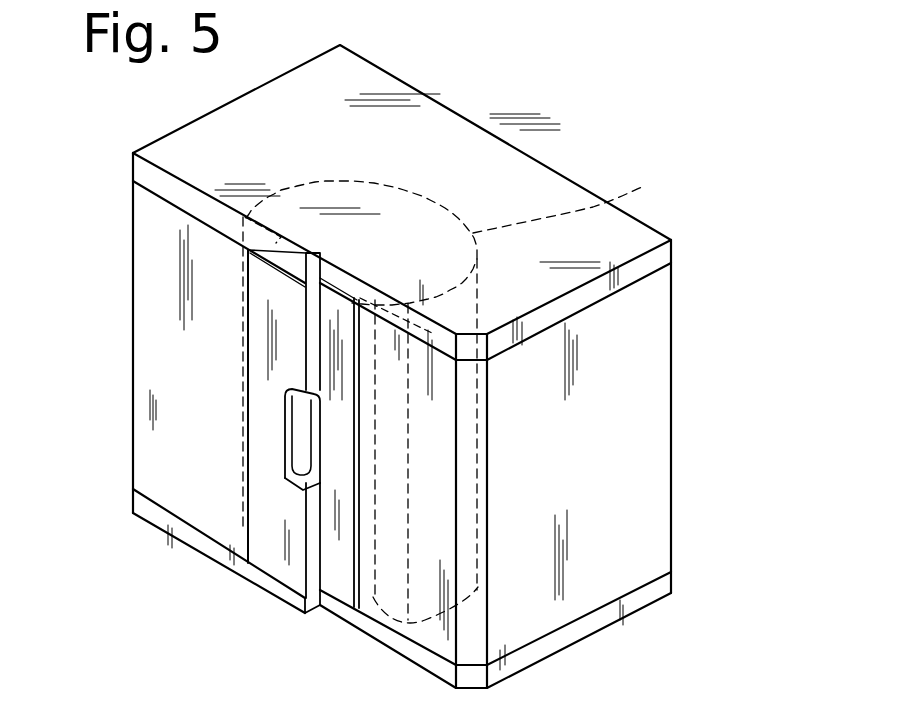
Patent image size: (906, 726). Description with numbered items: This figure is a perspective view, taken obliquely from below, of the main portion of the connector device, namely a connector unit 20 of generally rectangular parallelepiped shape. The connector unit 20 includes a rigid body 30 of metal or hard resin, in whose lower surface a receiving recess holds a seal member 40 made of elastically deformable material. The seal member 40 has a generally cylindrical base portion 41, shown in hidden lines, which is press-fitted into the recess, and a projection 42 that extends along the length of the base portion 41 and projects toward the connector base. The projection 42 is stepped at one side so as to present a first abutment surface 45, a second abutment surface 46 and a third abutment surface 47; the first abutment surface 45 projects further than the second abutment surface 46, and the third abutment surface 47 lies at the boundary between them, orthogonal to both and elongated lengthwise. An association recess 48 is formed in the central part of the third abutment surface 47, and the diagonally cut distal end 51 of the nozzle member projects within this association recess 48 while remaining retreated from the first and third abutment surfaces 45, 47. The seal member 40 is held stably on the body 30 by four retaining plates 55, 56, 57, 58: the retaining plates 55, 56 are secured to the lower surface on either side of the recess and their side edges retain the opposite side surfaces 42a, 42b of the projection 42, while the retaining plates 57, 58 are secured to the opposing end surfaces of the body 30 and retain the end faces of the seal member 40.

The connector unit 20 is at (587, 182).
The body 30 is at (653, 377).
The seal member 40 is at (413, 187).
The base portion 41 is at (570, 197).
The projection 42 is at (248, 362).
The side surface of the projection 42a is at (243, 320).
The side surface of the projection 42b is at (378, 608).
The first abutment surface 45 is at (263, 436).
The second abutment surface 46 is at (337, 520).
The third abutment surface 47 is at (317, 528).
The association recess 48 is at (300, 475).
The distal end of the nozzle member 51 is at (313, 435).
The retaining plate 55 is at (167, 253).
The retaining plate 56 is at (428, 393).
The retaining plate 57 is at (487, 147).
The retaining plate 58 is at (600, 632).